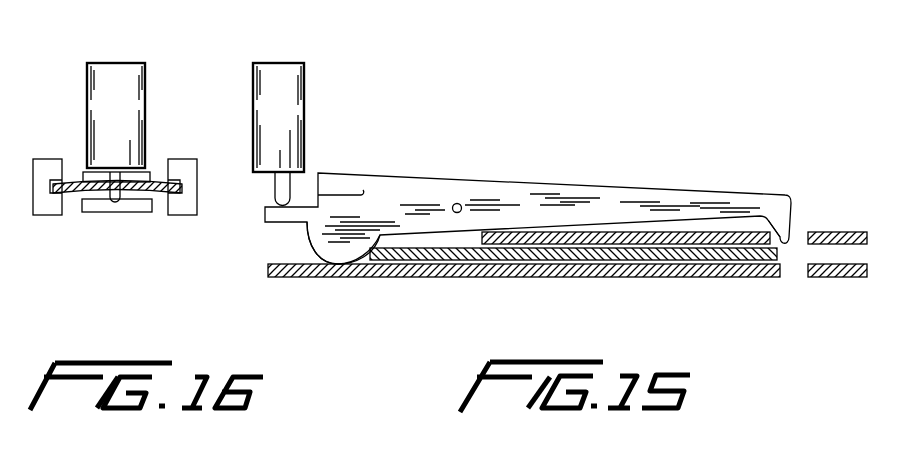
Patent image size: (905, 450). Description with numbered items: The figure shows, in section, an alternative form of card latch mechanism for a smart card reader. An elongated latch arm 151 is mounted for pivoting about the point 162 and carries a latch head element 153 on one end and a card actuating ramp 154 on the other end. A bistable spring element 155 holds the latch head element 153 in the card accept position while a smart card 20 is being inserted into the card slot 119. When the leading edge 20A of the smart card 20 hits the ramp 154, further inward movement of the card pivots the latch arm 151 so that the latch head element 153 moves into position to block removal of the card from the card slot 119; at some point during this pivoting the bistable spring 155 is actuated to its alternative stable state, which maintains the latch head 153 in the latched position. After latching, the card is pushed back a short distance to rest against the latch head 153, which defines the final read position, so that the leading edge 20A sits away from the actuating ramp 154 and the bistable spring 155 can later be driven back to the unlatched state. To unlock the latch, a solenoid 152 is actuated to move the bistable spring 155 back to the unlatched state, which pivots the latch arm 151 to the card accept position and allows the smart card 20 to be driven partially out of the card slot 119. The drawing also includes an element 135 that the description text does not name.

In FIG. 15, the smart card 20 is at (743, 268).
In FIG. 15, the leading edge 20A is at (388, 262).
In FIG. 15, the card slot 119 is at (867, 248).
In FIG. 15, the stop tab 135 is at (362, 188).
In FIG. 16, the latch arm 151 is at (148, 211).
In FIG. 15, the latch arm 151 is at (583, 193).
In FIG. 16, the solenoid 152 is at (108, 72).
In FIG. 15, the solenoid 152 is at (318, 115).
In FIG. 15, the latch head element 153 is at (778, 215).
In FIG. 15, the card actuating ramp 154 is at (345, 256).
In FIG. 16, the bistable spring element 155 is at (77, 196).
In FIG. 15, the pivot point 162 is at (460, 204).